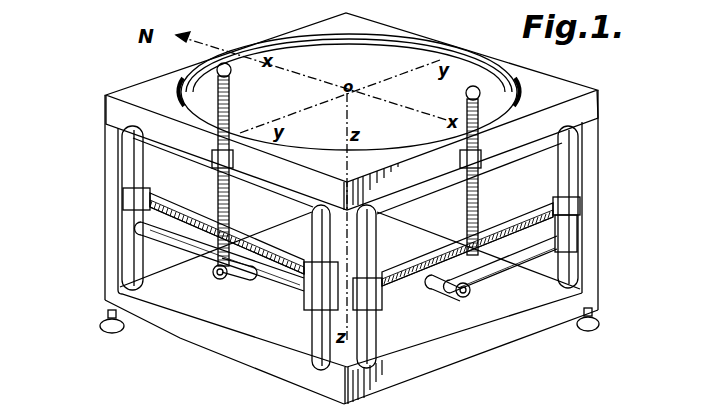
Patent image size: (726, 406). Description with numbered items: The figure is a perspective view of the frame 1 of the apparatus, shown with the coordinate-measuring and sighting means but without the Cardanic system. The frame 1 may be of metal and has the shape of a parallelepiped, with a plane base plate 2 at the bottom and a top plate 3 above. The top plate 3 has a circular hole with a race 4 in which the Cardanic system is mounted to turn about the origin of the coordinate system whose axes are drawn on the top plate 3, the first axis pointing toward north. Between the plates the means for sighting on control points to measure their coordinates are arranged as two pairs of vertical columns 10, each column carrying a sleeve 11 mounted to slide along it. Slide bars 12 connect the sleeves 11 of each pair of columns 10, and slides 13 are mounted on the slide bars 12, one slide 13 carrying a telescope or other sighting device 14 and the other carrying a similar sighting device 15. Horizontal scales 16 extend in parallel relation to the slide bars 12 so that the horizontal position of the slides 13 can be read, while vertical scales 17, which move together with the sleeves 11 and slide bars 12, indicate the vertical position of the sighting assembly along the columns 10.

The frame 1 is at (100, 328).
The base plate 2 is at (530, 292).
The top plate 3 is at (556, 88).
The race 4 is at (499, 77).
The vertical columns 10 is at (130, 160).
The sleeve 11 is at (128, 215).
The slide bars 12 is at (145, 237).
The slides 13 is at (238, 276).
The telescope or other sighting device 14 is at (216, 274).
The sighting device 15 is at (458, 298).
The horizontal scales 16 is at (203, 232).
The vertical scales 17 is at (217, 92).